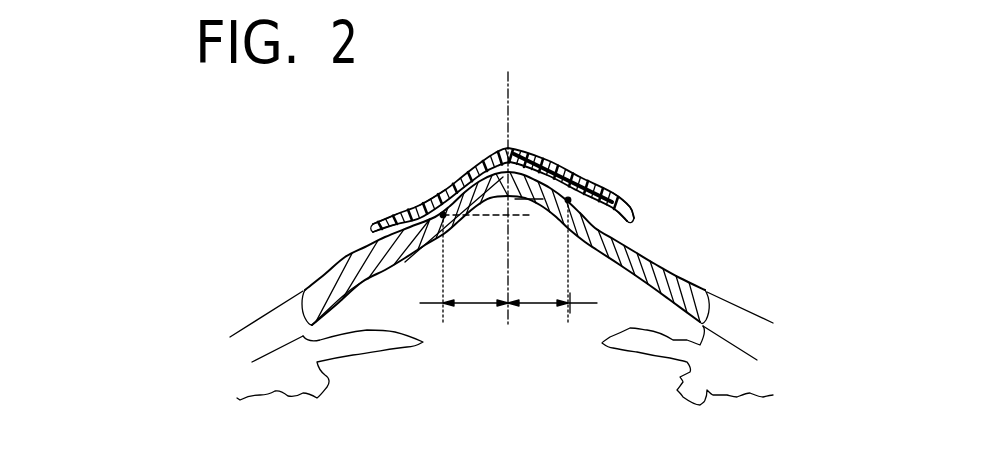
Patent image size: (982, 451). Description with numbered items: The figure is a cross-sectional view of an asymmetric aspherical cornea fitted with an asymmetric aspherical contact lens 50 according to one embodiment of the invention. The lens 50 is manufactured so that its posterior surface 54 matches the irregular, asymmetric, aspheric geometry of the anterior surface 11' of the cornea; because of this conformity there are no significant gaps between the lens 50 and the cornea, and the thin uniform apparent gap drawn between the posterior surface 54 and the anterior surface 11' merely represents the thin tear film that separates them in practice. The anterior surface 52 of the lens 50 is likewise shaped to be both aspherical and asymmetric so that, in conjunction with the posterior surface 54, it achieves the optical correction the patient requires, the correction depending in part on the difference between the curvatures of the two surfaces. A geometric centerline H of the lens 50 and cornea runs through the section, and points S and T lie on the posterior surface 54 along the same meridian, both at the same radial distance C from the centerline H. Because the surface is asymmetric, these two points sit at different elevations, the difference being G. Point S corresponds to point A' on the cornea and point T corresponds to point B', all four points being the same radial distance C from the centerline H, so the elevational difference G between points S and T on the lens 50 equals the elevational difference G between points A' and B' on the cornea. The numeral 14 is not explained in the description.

The anterior surface 52 is at (402, 215).
The posterior surface 54 is at (376, 223).
The asymmetric aspherical contact lens 50 is at (631, 213).
The anterior surface of cornea 11' is at (383, 248).
The inner surface of nasal bone 14 is at (363, 283).
The geometric centerline H is at (507, 88).
The point S is at (432, 198).
The elevational difference G is at (525, 205).
The point T is at (568, 190).
The point A' is at (460, 240).
The point B' is at (610, 177).
The radial distance C is at (511, 305).